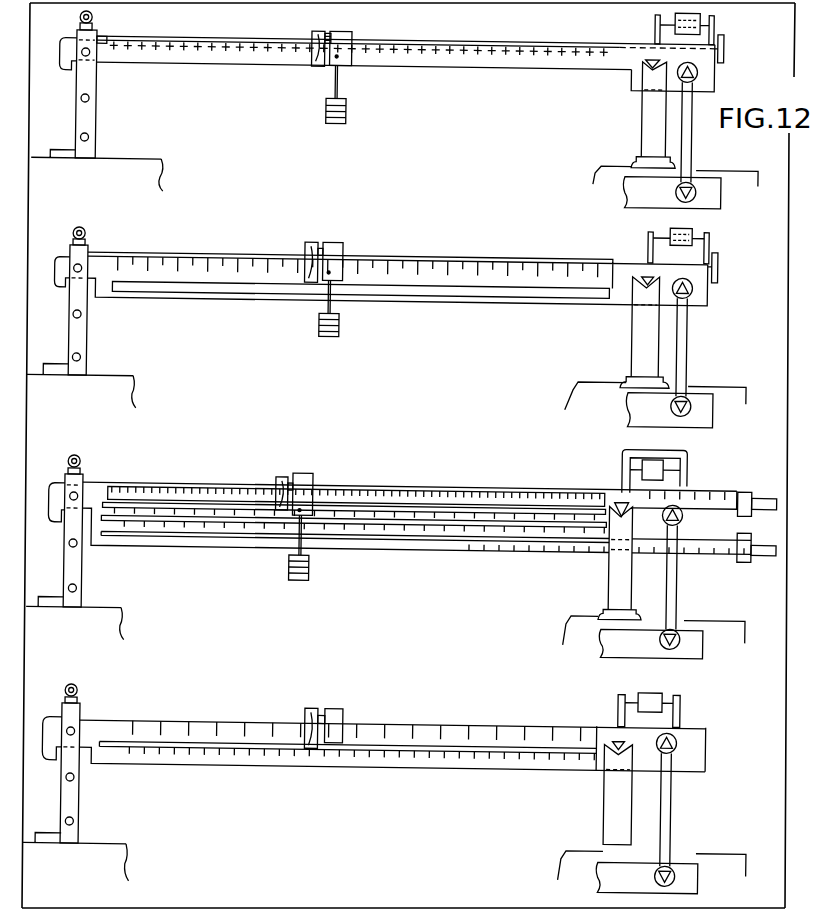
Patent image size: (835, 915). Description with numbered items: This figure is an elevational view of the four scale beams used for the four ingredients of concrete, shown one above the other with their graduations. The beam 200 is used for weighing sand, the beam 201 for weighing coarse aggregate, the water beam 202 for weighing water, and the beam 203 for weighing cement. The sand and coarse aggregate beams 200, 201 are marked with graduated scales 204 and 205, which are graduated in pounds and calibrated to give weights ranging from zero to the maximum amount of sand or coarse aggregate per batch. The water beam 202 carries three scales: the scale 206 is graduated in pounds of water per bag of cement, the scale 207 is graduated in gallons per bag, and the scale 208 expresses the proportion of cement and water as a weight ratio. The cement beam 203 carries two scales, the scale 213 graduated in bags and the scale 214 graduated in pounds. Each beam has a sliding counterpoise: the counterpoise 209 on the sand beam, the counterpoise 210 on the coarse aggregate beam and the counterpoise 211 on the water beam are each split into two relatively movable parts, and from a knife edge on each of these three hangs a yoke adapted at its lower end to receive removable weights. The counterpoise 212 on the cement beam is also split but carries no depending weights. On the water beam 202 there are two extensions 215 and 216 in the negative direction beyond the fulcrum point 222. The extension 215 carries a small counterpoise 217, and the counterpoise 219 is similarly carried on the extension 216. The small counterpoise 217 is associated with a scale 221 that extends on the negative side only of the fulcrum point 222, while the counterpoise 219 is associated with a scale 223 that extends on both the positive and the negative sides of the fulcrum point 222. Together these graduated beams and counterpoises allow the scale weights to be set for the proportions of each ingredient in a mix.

The beam 200 is at (63, 46).
The beam 201 is at (60, 257).
The water beam 202 is at (53, 483).
The beam 203 is at (52, 718).
The graduated scale 204 is at (158, 49).
The graduated scale 205 is at (192, 272).
The scale 206 is at (180, 487).
The scale 207 is at (196, 507).
The scale 208 is at (219, 522).
The counterpoise 209 is at (318, 38).
The counterpoise 210 is at (316, 242).
The counterpoise 211 is at (281, 473).
The counterpoise 212 is at (312, 708).
The scale 213 is at (193, 732).
The scale 214 is at (200, 753).
The extension 215 is at (760, 487).
The extension 216 is at (758, 532).
The small counterpoise 217 is at (745, 480).
The counterpoise 219 is at (749, 555).
The scale 221 is at (708, 483).
The fulcrum point 222 is at (619, 494).
The scale 223 is at (703, 546).